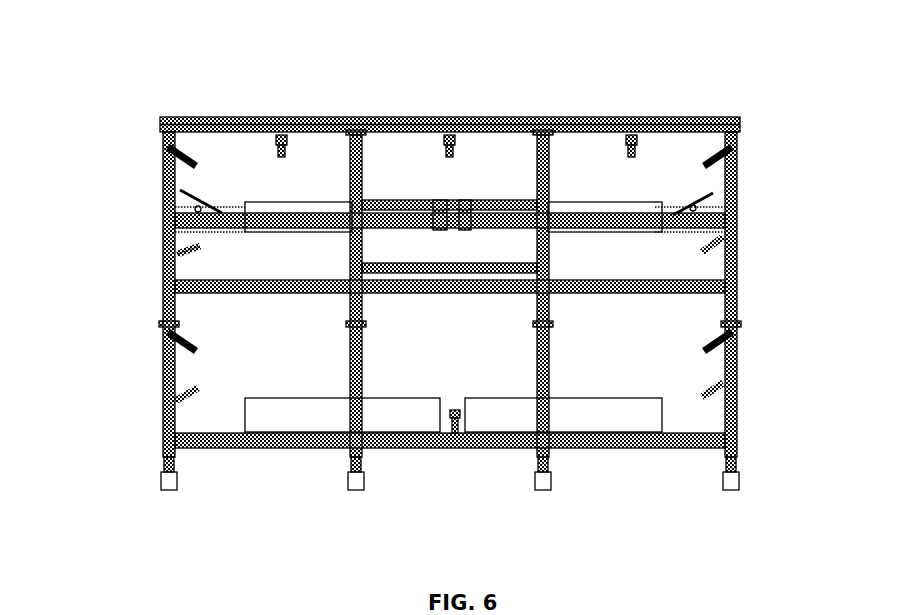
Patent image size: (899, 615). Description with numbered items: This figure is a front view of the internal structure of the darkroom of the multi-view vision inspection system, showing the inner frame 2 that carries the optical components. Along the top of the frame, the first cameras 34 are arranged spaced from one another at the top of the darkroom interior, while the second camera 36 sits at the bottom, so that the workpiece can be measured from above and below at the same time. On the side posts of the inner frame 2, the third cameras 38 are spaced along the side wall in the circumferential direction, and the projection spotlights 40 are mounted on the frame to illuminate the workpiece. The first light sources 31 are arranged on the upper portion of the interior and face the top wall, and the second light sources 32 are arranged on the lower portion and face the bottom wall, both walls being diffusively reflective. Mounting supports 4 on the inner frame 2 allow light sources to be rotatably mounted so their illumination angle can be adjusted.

The inner frame 2 is at (740, 118).
The mounting support 4 is at (182, 213).
The first light source 31 is at (170, 168).
The second light source 32 is at (325, 418).
The first camera 34 is at (284, 136).
The second camera 36 is at (448, 438).
The third camera 38 is at (180, 250).
The projection spotlight 40 is at (162, 127).